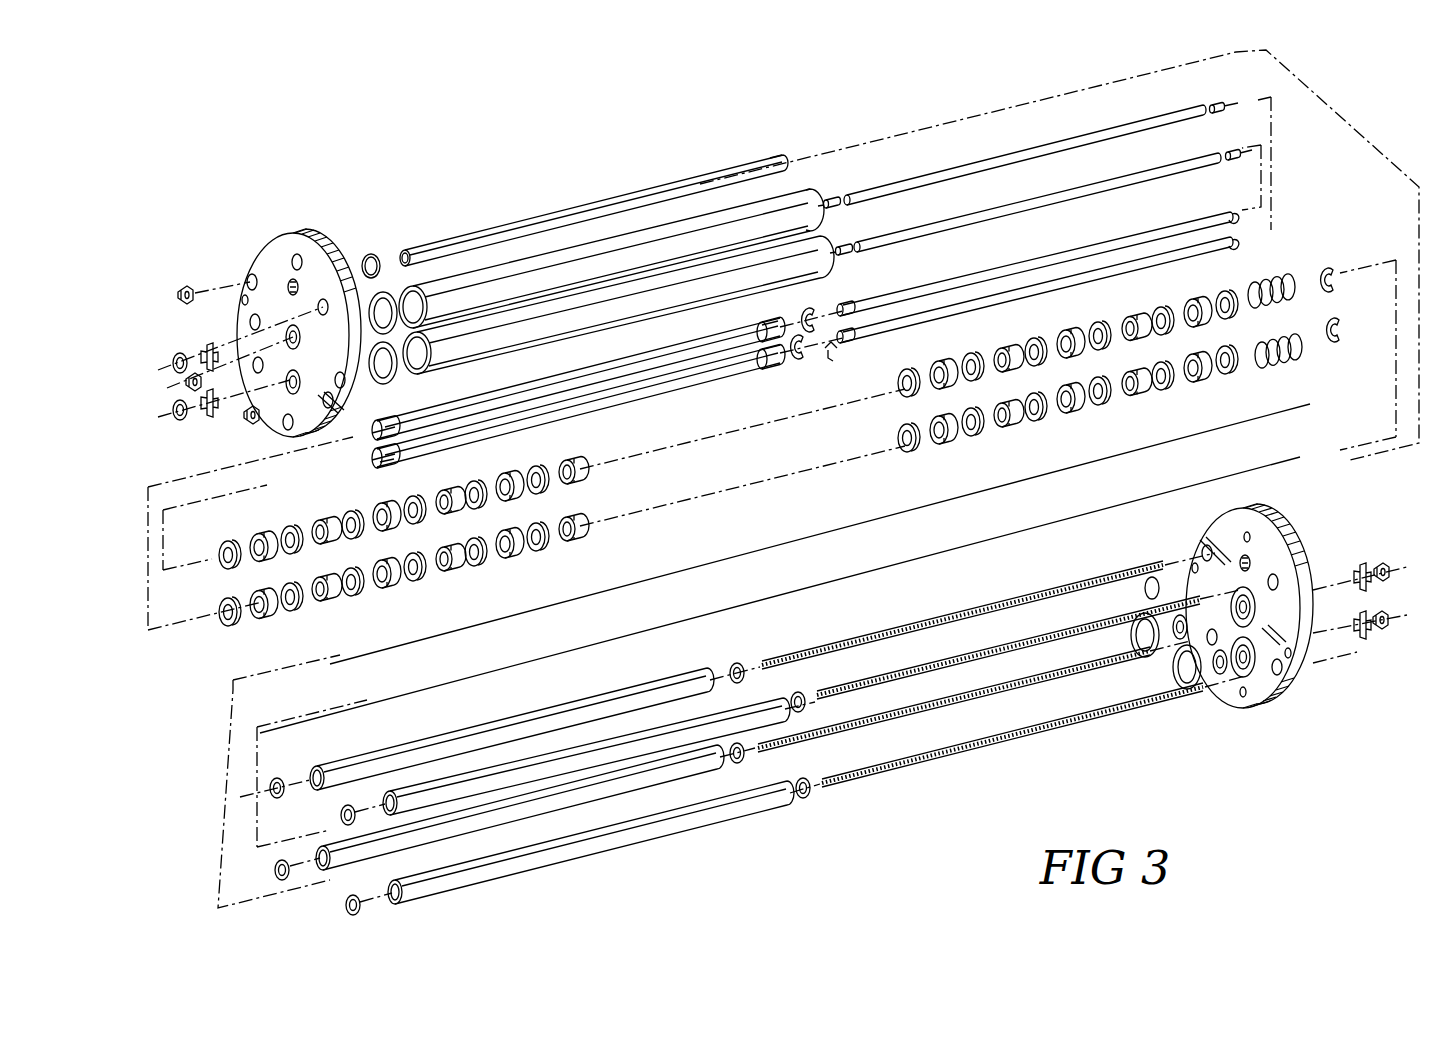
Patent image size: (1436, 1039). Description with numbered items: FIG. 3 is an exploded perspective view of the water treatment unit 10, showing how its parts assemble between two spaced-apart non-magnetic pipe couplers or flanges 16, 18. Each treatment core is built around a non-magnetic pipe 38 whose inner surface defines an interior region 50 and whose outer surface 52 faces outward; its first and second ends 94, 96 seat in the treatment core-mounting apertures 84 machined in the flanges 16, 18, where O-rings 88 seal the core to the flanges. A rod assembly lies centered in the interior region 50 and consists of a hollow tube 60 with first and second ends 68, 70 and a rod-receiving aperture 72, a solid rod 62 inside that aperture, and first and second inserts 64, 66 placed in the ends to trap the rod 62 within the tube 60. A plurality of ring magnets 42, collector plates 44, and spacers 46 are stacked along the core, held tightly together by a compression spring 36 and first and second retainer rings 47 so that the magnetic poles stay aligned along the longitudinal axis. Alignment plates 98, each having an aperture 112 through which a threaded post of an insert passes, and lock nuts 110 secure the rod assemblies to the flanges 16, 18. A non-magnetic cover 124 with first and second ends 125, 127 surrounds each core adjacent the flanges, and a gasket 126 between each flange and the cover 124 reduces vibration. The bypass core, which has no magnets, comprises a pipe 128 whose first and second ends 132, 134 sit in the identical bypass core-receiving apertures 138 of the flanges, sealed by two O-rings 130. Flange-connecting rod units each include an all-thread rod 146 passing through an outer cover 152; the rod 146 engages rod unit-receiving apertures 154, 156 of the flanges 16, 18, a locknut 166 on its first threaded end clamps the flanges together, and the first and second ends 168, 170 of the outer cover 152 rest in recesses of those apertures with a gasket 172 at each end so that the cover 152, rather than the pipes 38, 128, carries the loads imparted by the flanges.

The treatment unit 10 is at (668, 165).
The flange 16 is at (283, 308).
The flange 18 is at (1267, 631).
The spring 36 is at (1277, 282).
The pipe 38 is at (587, 372).
The ring magnets 42 is at (385, 510).
The collector plates 44 is at (228, 540).
The spacers 46 is at (453, 492).
The retainer rings 47 is at (813, 310).
The interior region 50 is at (370, 436).
The outer surface 52 is at (533, 382).
The hollow tube 60 is at (993, 272).
The solid rod 62 is at (922, 182).
The first insert 64 is at (838, 207).
The second insert 66 is at (1215, 115).
The first end 68 is at (850, 306).
The second end 70 is at (1230, 215).
The rod-receiving aperture 72 is at (838, 358).
The treatment core-mounting apertures 84 is at (299, 378).
The O-rings 88 is at (1185, 622).
The first end 94 is at (760, 328).
The second end 96 is at (400, 458).
The alignment plates 98 is at (200, 392).
The lock nuts 110 is at (182, 353).
The aperture 112 is at (213, 345).
The cover 124 is at (622, 252).
The first end 125 is at (426, 293).
The gasket 126 is at (383, 293).
The second end 127 is at (800, 198).
The pipe 128 is at (594, 190).
The O-rings 130 is at (371, 255).
The first end 132 is at (413, 248).
The second end 134 is at (772, 156).
The bypass core-receiving apertures 138 is at (302, 278).
The rod 146 is at (892, 632).
The outer cover 152 is at (535, 783).
The rod unit-receiving aperture 154 is at (262, 262).
The rod unit-receiving aperture 156 is at (1260, 690).
The locknut 166 is at (187, 285).
The first end 168 is at (324, 767).
The second end 170 is at (780, 700).
The gasket 172 is at (277, 778).